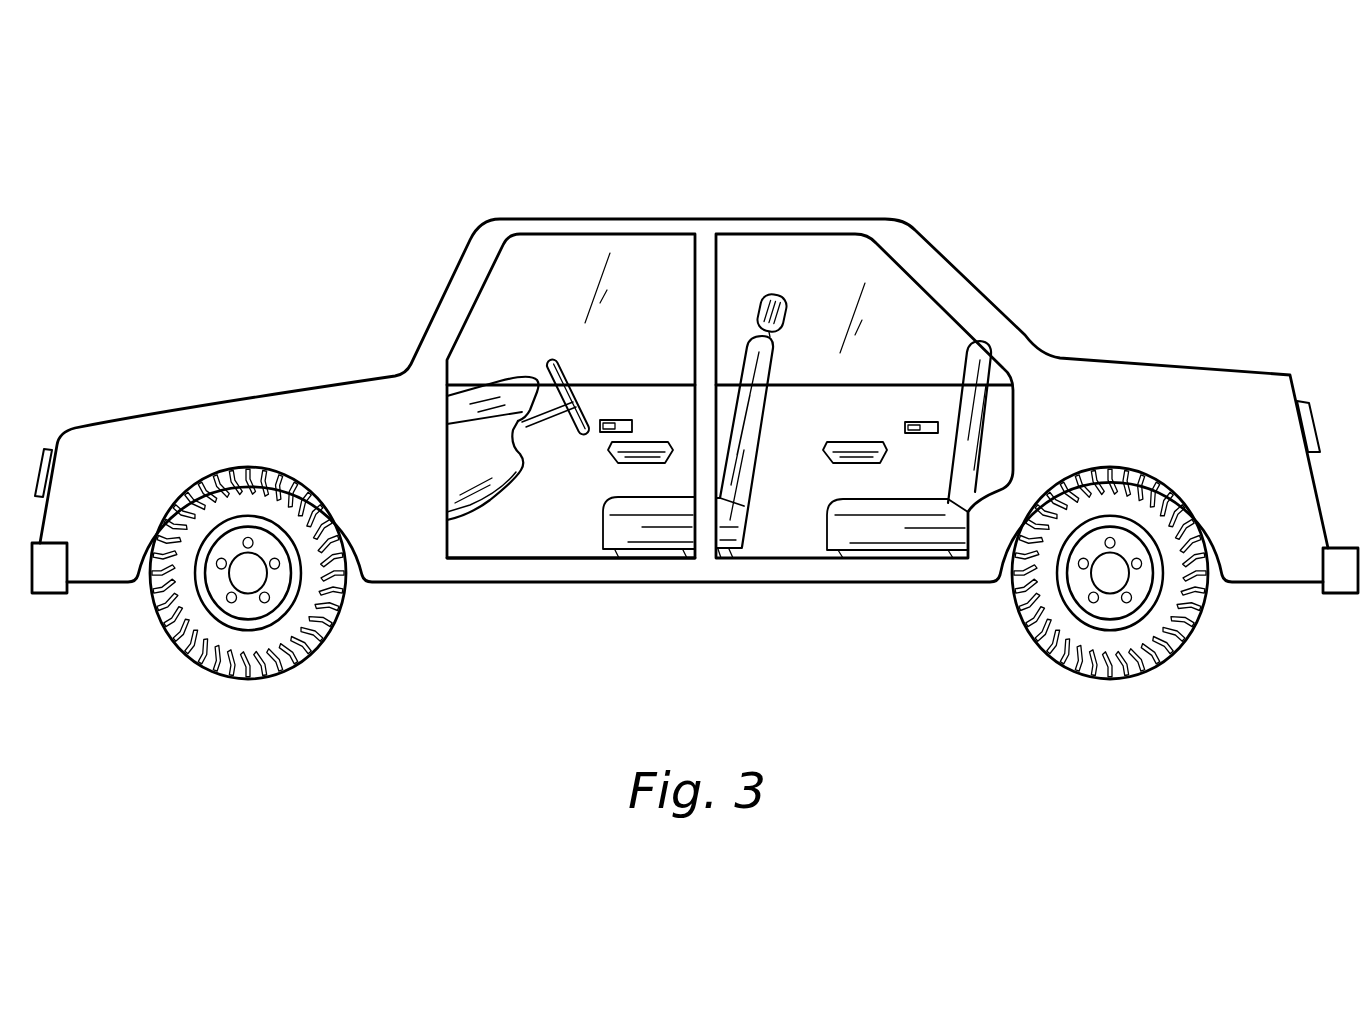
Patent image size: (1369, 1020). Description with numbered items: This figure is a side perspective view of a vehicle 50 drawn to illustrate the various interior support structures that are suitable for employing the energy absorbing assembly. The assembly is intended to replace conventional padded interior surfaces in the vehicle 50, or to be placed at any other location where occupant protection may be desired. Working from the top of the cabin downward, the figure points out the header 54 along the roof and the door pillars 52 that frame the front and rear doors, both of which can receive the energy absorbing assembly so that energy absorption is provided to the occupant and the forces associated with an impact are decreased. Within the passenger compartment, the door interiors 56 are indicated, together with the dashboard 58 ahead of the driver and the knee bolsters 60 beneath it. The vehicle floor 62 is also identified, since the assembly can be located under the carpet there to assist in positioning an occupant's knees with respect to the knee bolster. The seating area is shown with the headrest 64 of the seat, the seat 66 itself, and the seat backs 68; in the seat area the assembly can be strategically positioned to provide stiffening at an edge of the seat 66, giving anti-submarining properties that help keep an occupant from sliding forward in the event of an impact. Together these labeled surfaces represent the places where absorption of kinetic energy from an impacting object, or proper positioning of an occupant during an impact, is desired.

The vehicle 50 is at (1058, 152).
The door pillars 52 is at (685, 268).
The header 54 is at (533, 255).
The door interiors 56 is at (655, 380).
The dashboard 58 is at (500, 350).
The knee bolsters 60 is at (540, 470).
The vehicle floor 62 is at (528, 540).
The headrest 64 is at (740, 290).
The seat 66 is at (900, 482).
The seat backs 68 is at (805, 385).